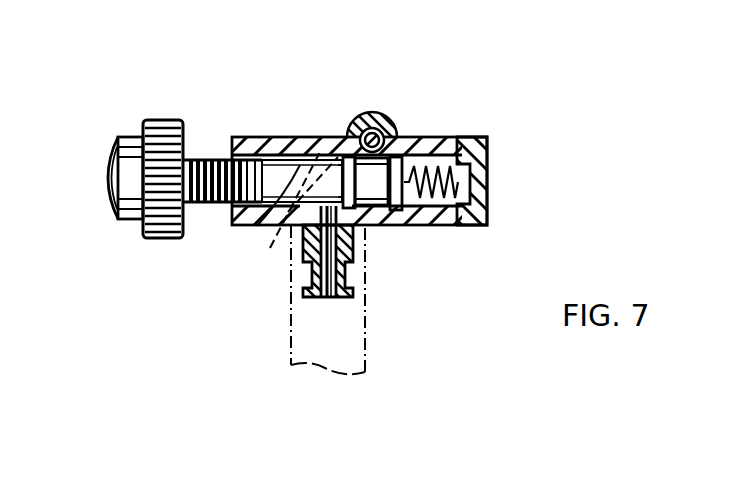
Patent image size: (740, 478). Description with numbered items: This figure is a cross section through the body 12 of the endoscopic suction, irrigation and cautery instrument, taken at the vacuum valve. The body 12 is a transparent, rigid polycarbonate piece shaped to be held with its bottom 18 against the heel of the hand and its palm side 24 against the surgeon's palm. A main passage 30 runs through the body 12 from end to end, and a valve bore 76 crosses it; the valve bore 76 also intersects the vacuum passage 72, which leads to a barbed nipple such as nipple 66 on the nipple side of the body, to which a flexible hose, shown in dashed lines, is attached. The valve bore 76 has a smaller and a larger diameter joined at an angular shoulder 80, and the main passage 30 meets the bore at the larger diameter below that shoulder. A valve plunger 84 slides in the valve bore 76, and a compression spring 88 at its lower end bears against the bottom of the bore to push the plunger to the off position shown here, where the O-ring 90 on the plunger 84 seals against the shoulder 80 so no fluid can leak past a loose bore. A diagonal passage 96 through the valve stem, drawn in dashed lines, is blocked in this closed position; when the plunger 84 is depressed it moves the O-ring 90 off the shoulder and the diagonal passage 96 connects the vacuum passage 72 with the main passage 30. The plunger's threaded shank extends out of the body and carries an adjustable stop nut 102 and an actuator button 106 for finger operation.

The body 12 is at (232, 131).
The bottom 18 is at (487, 170).
The palm side 24 is at (305, 137).
The main passage 30 is at (383, 128).
The nipple 66 is at (343, 306).
The vacuum passage 72 is at (338, 276).
The valve bore 76 is at (257, 226).
The shoulder 80 is at (352, 236).
The valve plunger 84 is at (278, 152).
The compression spring 88 is at (443, 200).
The O-ring 90 is at (337, 137).
The diagonal passage 96 is at (276, 232).
The adjustable stop nut 102 is at (165, 118).
The actuator button 106 is at (104, 178).